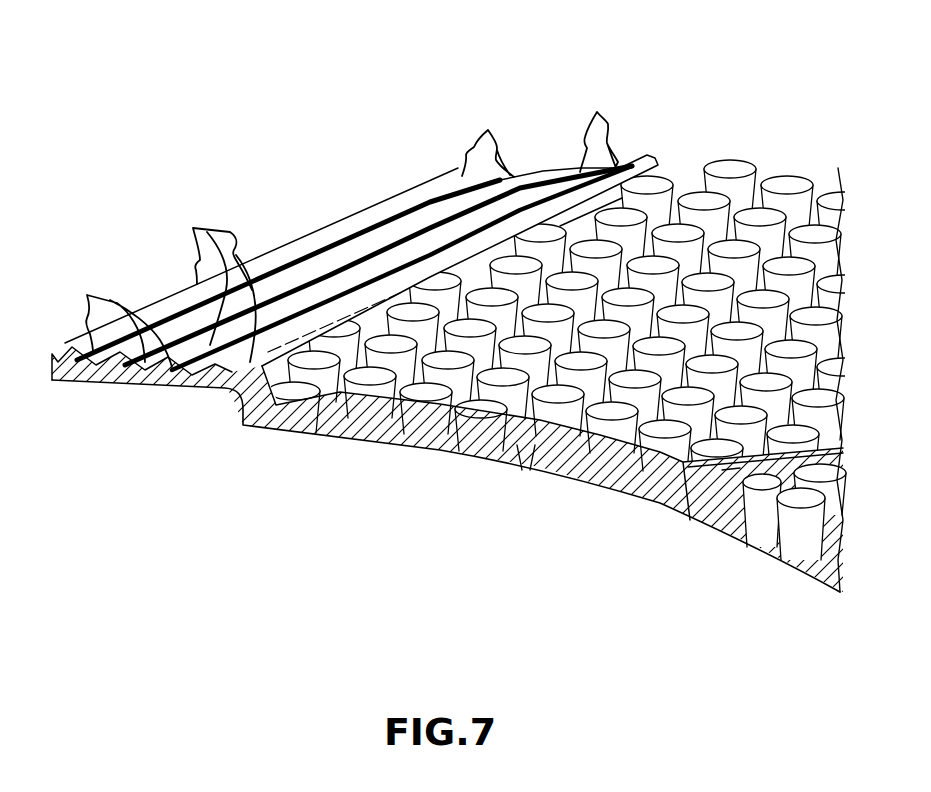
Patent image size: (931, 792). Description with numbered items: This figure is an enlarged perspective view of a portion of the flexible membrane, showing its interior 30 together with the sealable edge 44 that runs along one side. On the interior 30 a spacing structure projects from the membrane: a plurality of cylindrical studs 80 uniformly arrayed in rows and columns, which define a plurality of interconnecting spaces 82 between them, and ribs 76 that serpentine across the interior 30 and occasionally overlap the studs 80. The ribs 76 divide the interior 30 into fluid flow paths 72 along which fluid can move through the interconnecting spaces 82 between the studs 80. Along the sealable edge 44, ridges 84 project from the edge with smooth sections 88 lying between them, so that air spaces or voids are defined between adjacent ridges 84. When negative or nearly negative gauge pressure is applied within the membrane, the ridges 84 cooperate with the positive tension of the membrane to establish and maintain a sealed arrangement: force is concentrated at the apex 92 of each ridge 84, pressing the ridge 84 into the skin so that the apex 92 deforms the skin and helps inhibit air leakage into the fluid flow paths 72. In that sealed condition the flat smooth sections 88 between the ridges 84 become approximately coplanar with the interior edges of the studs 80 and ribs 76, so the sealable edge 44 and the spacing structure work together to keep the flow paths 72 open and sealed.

The interior 30 is at (371, 118).
The sealable edge 44 is at (231, 404).
The fluid flow paths 72 is at (486, 477).
The ribs 76 is at (717, 495).
The studs 80 is at (784, 181).
The interconnecting spaces 82 is at (523, 448).
The ridges 84 is at (540, 130).
The smooth sections 88 is at (120, 318).
The apex 92 is at (193, 228).